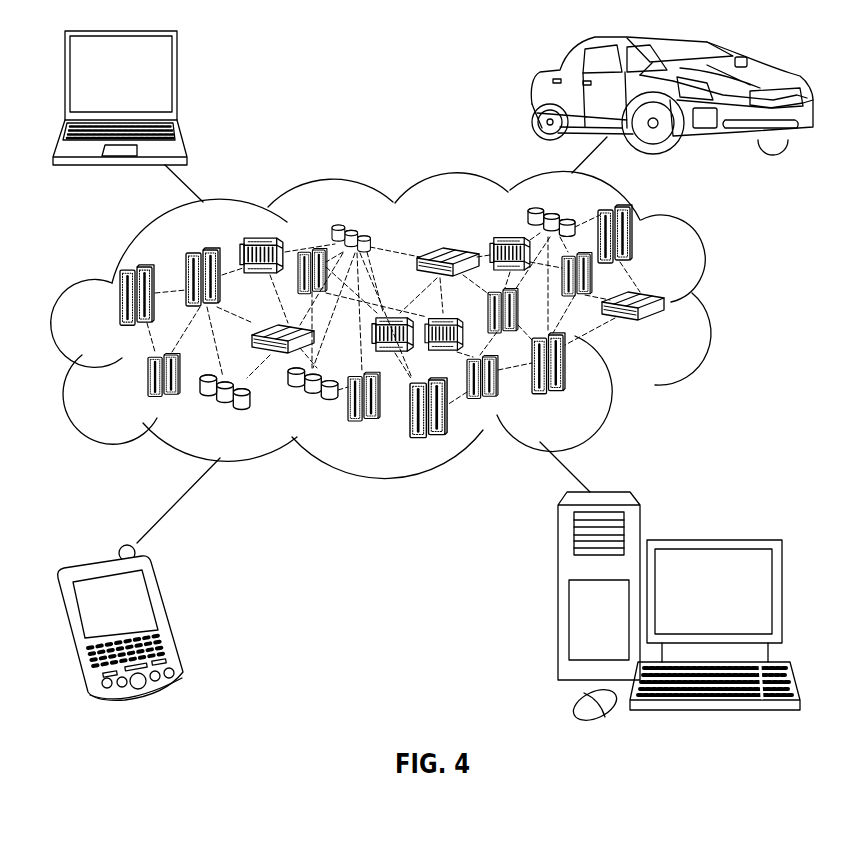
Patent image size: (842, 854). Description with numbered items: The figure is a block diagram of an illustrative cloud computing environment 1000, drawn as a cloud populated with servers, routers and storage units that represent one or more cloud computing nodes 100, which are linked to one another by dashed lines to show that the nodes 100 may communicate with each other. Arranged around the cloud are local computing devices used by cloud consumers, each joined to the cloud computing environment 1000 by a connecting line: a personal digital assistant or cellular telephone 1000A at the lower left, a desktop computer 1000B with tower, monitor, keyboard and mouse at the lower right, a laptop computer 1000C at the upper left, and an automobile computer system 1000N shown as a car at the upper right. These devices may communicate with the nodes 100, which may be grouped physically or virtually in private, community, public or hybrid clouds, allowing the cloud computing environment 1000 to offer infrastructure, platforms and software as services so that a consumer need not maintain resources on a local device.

The cloud computing nodes 100 is at (665, 329).
The cloud computing environment 1000 is at (713, 305).
The personal digital assistant (PDA) or cellular telephone 1000A is at (168, 617).
The desktop computer 1000B is at (712, 540).
The laptop computer 1000C is at (178, 82).
The automobile computer system 1000N is at (530, 96).